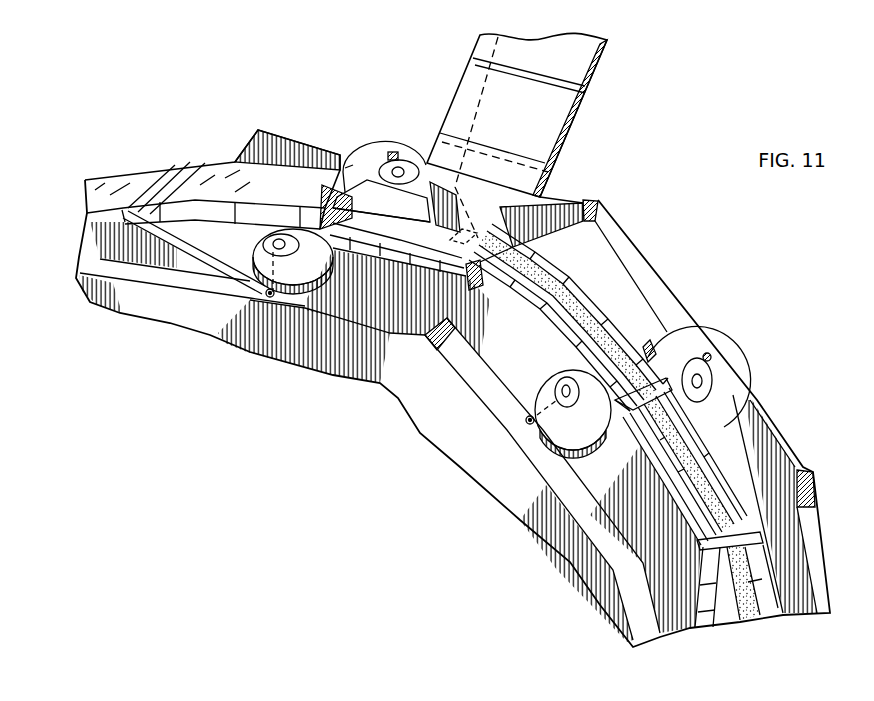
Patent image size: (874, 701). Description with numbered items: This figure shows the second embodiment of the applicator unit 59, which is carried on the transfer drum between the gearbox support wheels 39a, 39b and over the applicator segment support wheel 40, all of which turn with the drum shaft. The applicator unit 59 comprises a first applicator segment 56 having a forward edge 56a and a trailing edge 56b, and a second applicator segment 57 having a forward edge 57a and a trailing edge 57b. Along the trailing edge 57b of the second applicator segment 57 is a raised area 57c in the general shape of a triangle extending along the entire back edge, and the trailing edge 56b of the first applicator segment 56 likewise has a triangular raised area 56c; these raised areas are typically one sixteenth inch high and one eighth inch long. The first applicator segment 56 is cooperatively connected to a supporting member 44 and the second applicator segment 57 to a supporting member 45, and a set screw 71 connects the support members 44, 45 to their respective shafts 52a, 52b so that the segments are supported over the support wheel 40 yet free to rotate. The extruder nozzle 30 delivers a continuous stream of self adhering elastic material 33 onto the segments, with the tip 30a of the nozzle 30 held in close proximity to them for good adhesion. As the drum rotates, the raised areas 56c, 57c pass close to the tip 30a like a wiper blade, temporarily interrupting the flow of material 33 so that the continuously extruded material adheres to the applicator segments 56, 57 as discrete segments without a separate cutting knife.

The extruder nozzle 30 is at (590, 92).
The tip of the extruder nozzle 30a is at (494, 222).
The self adhering elastic material 33 is at (485, 240).
The gearbox support wheel 39a is at (453, 413).
The gearbox support wheel 39b is at (625, 253).
The applicator segment support wheel 40 is at (590, 480).
The supporting member 44 is at (280, 277).
The supporting member 45 is at (373, 148).
The shaft 52a is at (264, 243).
The shaft 52b is at (399, 168).
The first applicator segment 56 is at (222, 168).
The forward edge 56a is at (330, 200).
The trailing edge 56b is at (157, 200).
The raised area 56c is at (185, 165).
The second applicator segment 57 is at (403, 222).
The forward edge 57a is at (464, 278).
The trailing edge 57b is at (351, 203).
The raised area 57c is at (351, 162).
The applicator unit 59 is at (339, 255).
The set screw 71 is at (267, 297).